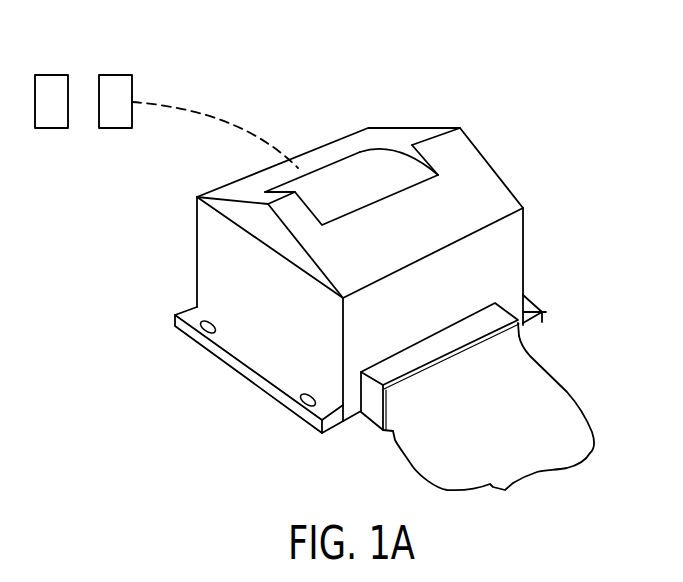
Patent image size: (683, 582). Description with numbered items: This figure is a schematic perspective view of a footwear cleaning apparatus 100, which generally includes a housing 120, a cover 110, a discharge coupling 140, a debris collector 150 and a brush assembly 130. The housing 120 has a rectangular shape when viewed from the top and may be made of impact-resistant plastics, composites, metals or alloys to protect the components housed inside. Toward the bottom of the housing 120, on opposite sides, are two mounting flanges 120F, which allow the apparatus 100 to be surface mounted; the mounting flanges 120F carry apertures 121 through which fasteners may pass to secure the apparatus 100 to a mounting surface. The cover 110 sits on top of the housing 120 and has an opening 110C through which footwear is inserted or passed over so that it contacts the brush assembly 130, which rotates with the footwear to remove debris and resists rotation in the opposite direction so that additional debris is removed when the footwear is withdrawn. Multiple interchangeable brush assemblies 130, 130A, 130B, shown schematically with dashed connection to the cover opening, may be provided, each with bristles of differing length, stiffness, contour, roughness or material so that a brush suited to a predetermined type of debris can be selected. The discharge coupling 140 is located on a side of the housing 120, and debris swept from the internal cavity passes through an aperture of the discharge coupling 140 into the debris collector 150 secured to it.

The footwear cleaning apparatus 100 is at (514, 72).
The cover 110 is at (377, 241).
The opening 110C is at (416, 141).
The housing 120 is at (361, 331).
The mounting flange 120F is at (543, 315).
The aperture 121 is at (300, 398).
The brush assembly 130 is at (356, 152).
The interchangeable brush assembly 130A is at (115, 73).
The interchangeable brush assembly 130B is at (52, 73).
The discharge coupling 140 is at (500, 305).
The debris collector 150 is at (558, 405).